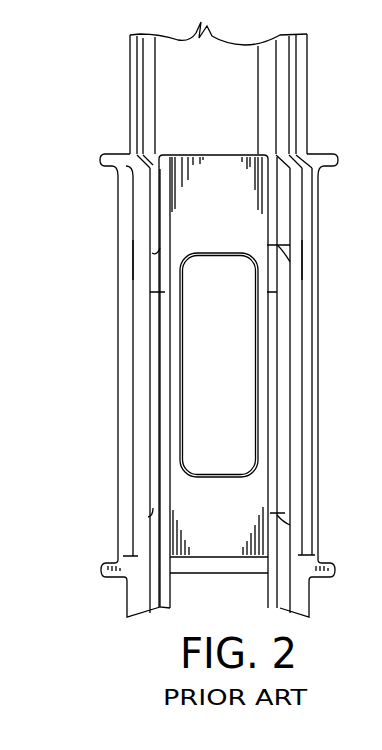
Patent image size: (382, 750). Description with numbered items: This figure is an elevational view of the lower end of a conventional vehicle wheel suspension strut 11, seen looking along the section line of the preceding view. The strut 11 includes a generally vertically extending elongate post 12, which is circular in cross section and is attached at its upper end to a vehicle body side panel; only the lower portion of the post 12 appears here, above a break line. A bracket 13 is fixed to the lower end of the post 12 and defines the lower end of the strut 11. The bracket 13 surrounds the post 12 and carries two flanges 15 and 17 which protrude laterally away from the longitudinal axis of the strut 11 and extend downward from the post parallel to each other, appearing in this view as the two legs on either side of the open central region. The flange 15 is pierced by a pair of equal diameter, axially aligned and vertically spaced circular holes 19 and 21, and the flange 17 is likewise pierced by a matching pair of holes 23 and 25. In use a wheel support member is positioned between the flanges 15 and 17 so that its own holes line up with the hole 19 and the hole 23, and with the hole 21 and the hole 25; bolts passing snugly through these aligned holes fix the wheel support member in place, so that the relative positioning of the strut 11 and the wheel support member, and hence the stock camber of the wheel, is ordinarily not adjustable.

The strut 11 is at (203, 312).
The post 12 is at (238, 52).
The bracket 13 is at (128, 196).
The flange 15 is at (283, 595).
The flange 17 is at (153, 592).
The hole 19 is at (283, 252).
The hole 21 is at (283, 520).
The hole 23 is at (157, 249).
The hole 25 is at (150, 514).